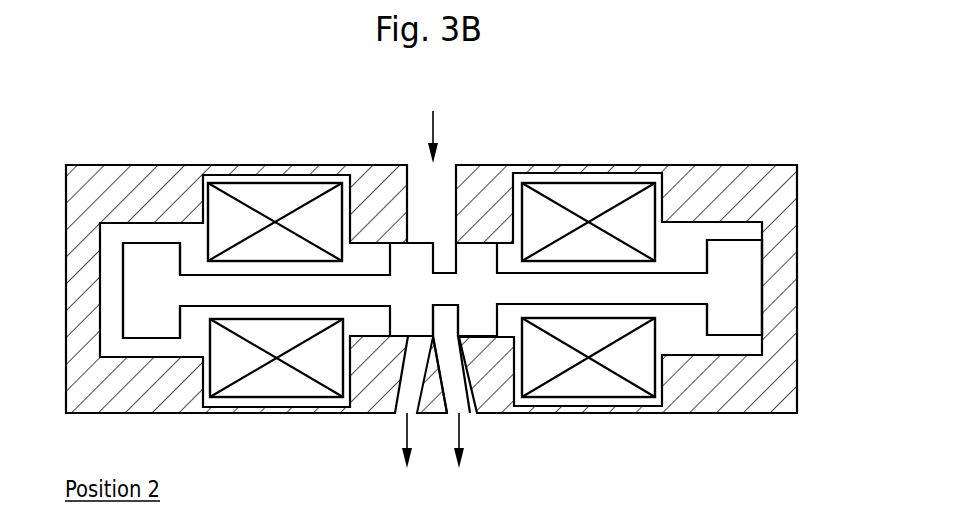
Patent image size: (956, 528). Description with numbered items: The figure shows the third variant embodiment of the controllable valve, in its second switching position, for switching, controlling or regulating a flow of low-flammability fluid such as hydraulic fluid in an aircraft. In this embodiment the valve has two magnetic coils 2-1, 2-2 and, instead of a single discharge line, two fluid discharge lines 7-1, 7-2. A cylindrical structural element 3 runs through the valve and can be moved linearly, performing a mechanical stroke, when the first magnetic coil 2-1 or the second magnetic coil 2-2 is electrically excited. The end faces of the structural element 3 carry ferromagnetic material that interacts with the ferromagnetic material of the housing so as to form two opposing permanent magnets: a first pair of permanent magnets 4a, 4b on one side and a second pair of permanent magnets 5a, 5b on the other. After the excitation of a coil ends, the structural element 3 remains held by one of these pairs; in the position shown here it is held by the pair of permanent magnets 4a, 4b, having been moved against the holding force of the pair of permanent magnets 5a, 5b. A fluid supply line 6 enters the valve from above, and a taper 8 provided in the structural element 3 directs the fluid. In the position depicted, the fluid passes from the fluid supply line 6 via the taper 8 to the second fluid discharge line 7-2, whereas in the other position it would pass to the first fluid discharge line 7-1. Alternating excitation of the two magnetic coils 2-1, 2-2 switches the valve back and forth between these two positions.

The first magnetic coil 2-1 is at (275, 200).
The second magnetic coil 2-2 is at (587, 200).
The structural element 3 is at (363, 304).
The first permanent magnet 4a is at (97, 316).
The first permanent magnet 4b is at (158, 316).
The second permanent magnet 5a is at (752, 316).
The second permanent magnet 5b is at (793, 316).
The fluid supply line 6 is at (436, 128).
The first fluid discharge line 7-1 is at (405, 435).
The second fluid discharge line 7-2 is at (462, 436).
The taper 8 is at (455, 304).